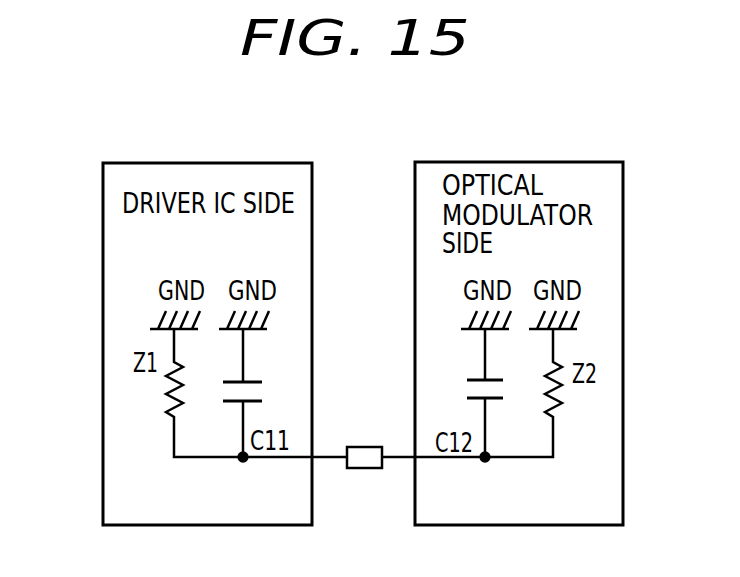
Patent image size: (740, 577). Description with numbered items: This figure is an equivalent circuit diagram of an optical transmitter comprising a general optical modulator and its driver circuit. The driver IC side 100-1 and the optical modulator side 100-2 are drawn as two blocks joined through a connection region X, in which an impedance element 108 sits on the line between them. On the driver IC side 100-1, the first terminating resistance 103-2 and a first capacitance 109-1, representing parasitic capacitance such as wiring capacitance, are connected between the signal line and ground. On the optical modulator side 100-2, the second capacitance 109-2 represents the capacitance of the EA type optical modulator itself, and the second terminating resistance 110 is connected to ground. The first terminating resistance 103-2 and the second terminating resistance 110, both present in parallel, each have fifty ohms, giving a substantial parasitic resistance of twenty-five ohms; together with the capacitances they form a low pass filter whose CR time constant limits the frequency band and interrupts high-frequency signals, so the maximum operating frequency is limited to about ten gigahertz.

The connection region between driver IC side and optical modulator side X is at (384, 130).
The driver IC side 100-1 is at (190, 162).
The EA type optical modulator 100-2 is at (503, 161).
The Z1 103-2 is at (162, 392).
The capacitor C11 109-1 is at (258, 392).
The capacitor C12 109-2 is at (497, 402).
The impedance element Z (transmission line) 108 is at (364, 470).
The Z2 110 is at (563, 393).